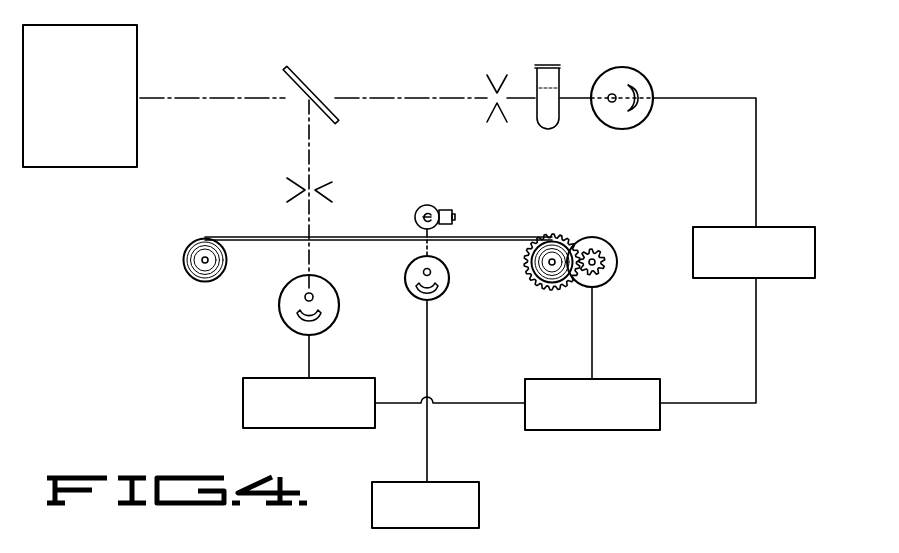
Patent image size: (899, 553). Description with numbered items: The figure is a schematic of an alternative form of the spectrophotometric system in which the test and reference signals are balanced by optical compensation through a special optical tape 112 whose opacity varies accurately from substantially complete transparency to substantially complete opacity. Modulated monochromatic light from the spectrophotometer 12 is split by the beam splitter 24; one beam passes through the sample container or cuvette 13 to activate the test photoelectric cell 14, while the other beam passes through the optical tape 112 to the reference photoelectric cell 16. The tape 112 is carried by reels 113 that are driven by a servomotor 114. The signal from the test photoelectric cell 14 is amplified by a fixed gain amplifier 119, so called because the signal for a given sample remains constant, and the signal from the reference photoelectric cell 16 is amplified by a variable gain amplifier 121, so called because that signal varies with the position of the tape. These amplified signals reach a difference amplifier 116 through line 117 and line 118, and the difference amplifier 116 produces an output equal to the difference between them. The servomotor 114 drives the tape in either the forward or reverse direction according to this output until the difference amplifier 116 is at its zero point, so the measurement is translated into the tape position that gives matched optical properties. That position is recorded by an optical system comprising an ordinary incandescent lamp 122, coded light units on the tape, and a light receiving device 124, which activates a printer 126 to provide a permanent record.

The spectrophotometer 12 is at (137, 58).
The beam splitter 24 is at (303, 82).
The sample container or cuvette 13 is at (561, 70).
The test photoelectric cell 14 is at (650, 83).
The fixed gain amplifier 119 is at (720, 227).
The line 117 is at (756, 345).
The difference amplifier 116 is at (623, 379).
The line 118 is at (496, 401).
The printer 126 is at (480, 497).
The variable gain amplifier 121 is at (243, 403).
The reference photoelectric cell 16 is at (333, 288).
The light receiving device 124 is at (446, 291).
The incandescent lamp 122 is at (443, 210).
The optical tape 112 is at (345, 237).
The reels 113 is at (200, 283).
The servomotor 114 is at (603, 248).